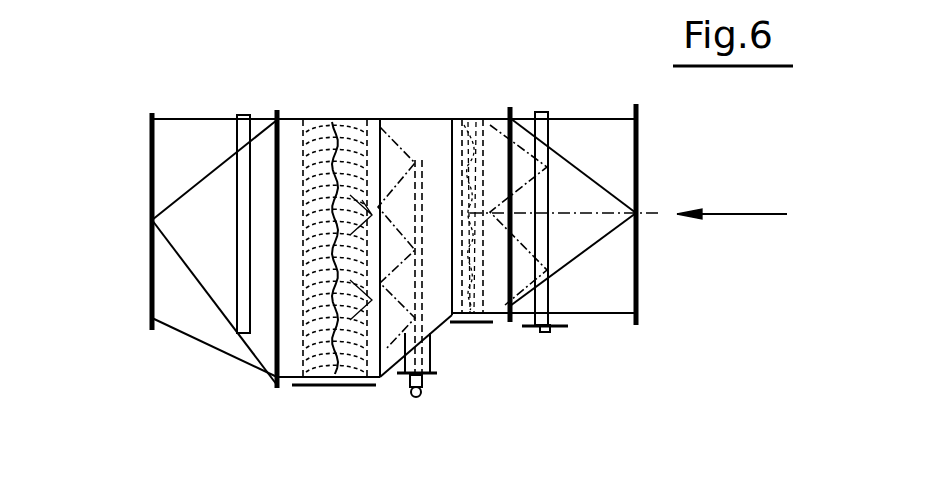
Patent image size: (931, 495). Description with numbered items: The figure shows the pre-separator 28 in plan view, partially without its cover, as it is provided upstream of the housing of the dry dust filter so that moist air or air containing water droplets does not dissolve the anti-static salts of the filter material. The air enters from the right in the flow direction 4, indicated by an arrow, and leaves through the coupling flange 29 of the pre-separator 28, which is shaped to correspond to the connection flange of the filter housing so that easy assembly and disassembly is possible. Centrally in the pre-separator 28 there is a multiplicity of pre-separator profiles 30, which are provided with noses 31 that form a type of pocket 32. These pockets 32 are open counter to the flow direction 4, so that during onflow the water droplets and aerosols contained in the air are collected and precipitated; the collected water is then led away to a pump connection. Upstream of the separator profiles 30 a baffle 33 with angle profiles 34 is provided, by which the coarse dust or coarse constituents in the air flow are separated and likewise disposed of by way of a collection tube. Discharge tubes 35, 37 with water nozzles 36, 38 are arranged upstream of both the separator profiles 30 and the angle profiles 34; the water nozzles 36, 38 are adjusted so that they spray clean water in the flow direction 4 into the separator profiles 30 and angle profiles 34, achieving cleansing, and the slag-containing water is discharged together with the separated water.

The flow direction 4 is at (760, 215).
The pre-separator 28 is at (410, 120).
The coupling flange 29 is at (150, 290).
The pre-separator profiles 30 is at (315, 125).
The noses 31 is at (335, 165).
The pocket 32 is at (334, 373).
The baffle 33 is at (468, 305).
The angle profiles 34 is at (486, 122).
The discharge tube 35 is at (416, 382).
The water nozzle 36 is at (415, 160).
The discharge tube 37 is at (555, 318).
The water nozzle 38 is at (512, 173).